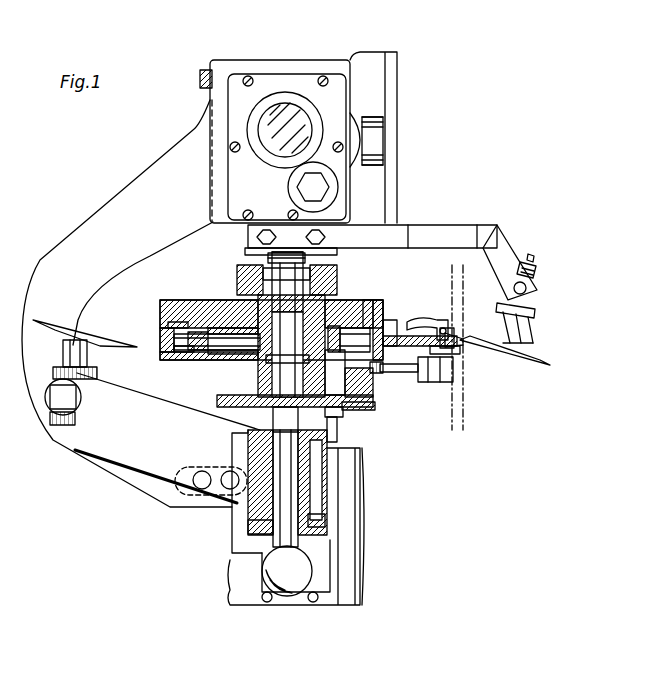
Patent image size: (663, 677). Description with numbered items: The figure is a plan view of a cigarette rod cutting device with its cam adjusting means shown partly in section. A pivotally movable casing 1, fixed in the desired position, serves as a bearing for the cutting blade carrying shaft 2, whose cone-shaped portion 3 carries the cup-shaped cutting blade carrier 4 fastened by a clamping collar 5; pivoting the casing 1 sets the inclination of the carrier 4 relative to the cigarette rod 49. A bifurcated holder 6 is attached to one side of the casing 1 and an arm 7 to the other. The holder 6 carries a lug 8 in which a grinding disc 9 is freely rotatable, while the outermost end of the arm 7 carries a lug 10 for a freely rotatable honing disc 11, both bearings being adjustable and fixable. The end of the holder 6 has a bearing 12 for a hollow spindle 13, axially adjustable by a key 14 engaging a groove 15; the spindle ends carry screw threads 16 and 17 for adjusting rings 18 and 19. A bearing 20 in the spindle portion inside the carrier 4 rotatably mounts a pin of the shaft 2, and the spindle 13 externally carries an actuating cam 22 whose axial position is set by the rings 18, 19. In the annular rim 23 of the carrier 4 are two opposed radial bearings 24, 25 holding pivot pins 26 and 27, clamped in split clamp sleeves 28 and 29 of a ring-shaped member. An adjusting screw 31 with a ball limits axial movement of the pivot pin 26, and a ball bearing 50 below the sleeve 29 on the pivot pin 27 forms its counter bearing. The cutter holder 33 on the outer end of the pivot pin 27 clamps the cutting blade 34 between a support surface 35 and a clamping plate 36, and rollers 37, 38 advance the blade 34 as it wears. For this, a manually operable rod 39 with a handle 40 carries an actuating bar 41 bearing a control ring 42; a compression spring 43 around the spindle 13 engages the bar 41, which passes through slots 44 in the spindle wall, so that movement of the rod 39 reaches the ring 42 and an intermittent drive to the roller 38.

The casing 1 is at (260, 78).
The cutting blade carrying shaft 2 is at (270, 258).
The cone-shaped portion 3 is at (287, 282).
The cutting blade carrier 4 is at (198, 307).
The clamping collar 5 is at (320, 275).
The bifurcated holder 6 is at (157, 467).
The arm 7 is at (465, 223).
The lug 8 is at (78, 400).
The grinding disc 9 is at (100, 340).
The lug 10 is at (537, 282).
The honing disc 11 is at (515, 350).
The bearing 12 is at (320, 497).
The hollow spindle 13 is at (265, 456).
The key 14 is at (307, 478).
The groove 15 is at (285, 488).
The screw thread 16 is at (310, 533).
The screw thread 17 is at (336, 419).
The adjusting ring 18 is at (317, 520).
The adjusting ring 19 is at (337, 433).
The bearing 20 is at (291, 346).
The actuating cam 22 is at (233, 359).
The annular rim 23 is at (180, 353).
The bearing 24 is at (187, 327).
The bearing 25 is at (385, 300).
The pivot pin 26 is at (195, 352).
The pivot pin 27 is at (287, 366).
The split clamp sleeve 28 is at (217, 362).
The split clamp sleeve 29 is at (343, 302).
The adjusting screw 31 is at (163, 330).
The cutter holder 33 is at (390, 320).
The cutting blade 34 is at (465, 335).
The support surface 35 is at (460, 350).
The clamping plate 36 is at (412, 322).
The roller 37 is at (452, 330).
The roller 38 is at (440, 382).
The rod 39 is at (252, 527).
The handle 40 is at (295, 590).
The actuating bar 41 is at (230, 422).
The control ring 42 is at (363, 413).
The compression spring 43 is at (332, 372).
The slots 44 is at (285, 431).
The cigarette rod 49 is at (463, 413).
The ball bearing 50 is at (362, 302).